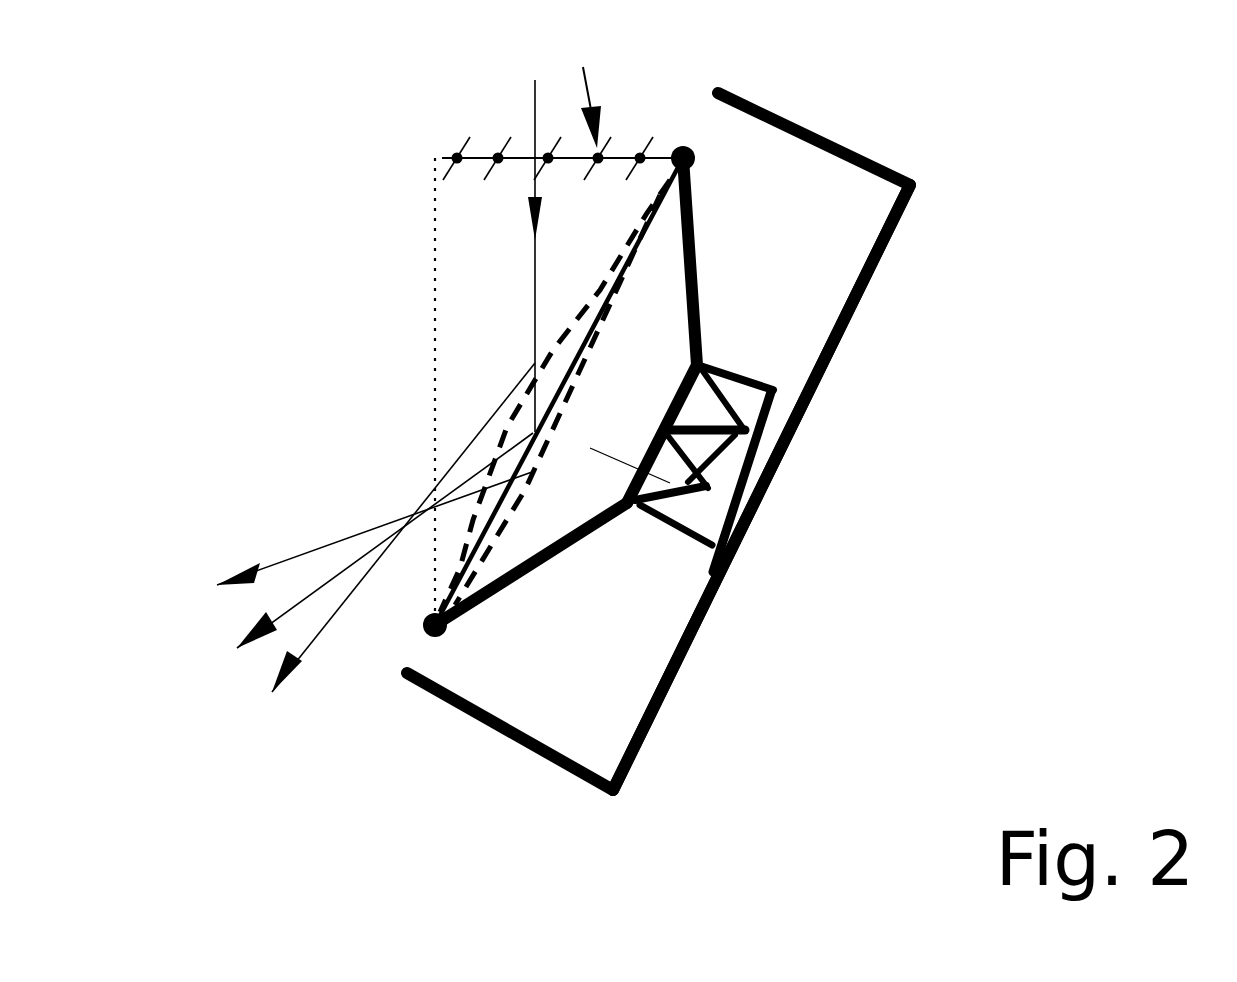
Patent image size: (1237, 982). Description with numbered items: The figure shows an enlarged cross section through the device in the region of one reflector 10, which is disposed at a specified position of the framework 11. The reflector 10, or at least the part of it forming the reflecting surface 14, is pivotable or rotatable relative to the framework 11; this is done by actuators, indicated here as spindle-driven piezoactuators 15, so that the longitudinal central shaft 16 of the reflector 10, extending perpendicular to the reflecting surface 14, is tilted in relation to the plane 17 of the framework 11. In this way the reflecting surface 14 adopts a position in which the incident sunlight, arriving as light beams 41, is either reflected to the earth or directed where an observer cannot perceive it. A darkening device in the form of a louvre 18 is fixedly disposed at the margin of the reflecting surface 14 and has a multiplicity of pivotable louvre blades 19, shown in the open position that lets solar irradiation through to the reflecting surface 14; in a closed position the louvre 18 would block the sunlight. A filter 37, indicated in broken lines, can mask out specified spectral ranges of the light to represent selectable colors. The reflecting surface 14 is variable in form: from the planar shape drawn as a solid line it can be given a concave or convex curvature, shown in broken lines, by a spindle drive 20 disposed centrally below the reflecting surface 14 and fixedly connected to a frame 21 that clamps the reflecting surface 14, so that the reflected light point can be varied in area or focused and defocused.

The reflector 10 is at (345, 455).
The framework 11 is at (837, 142).
The reflecting surface 14 is at (583, 350).
The spindle-driven piezoactuators 15 is at (730, 428).
The longitudinal central shaft 16 is at (701, 460).
The plane of the framework 17 is at (883, 257).
The louvre 18 is at (589, 87).
The louvre blades 19 is at (508, 143).
The spindle drive 20 is at (608, 428).
The frame 21 is at (545, 530).
The filter 37 is at (433, 390).
The light beams 41 is at (533, 108).